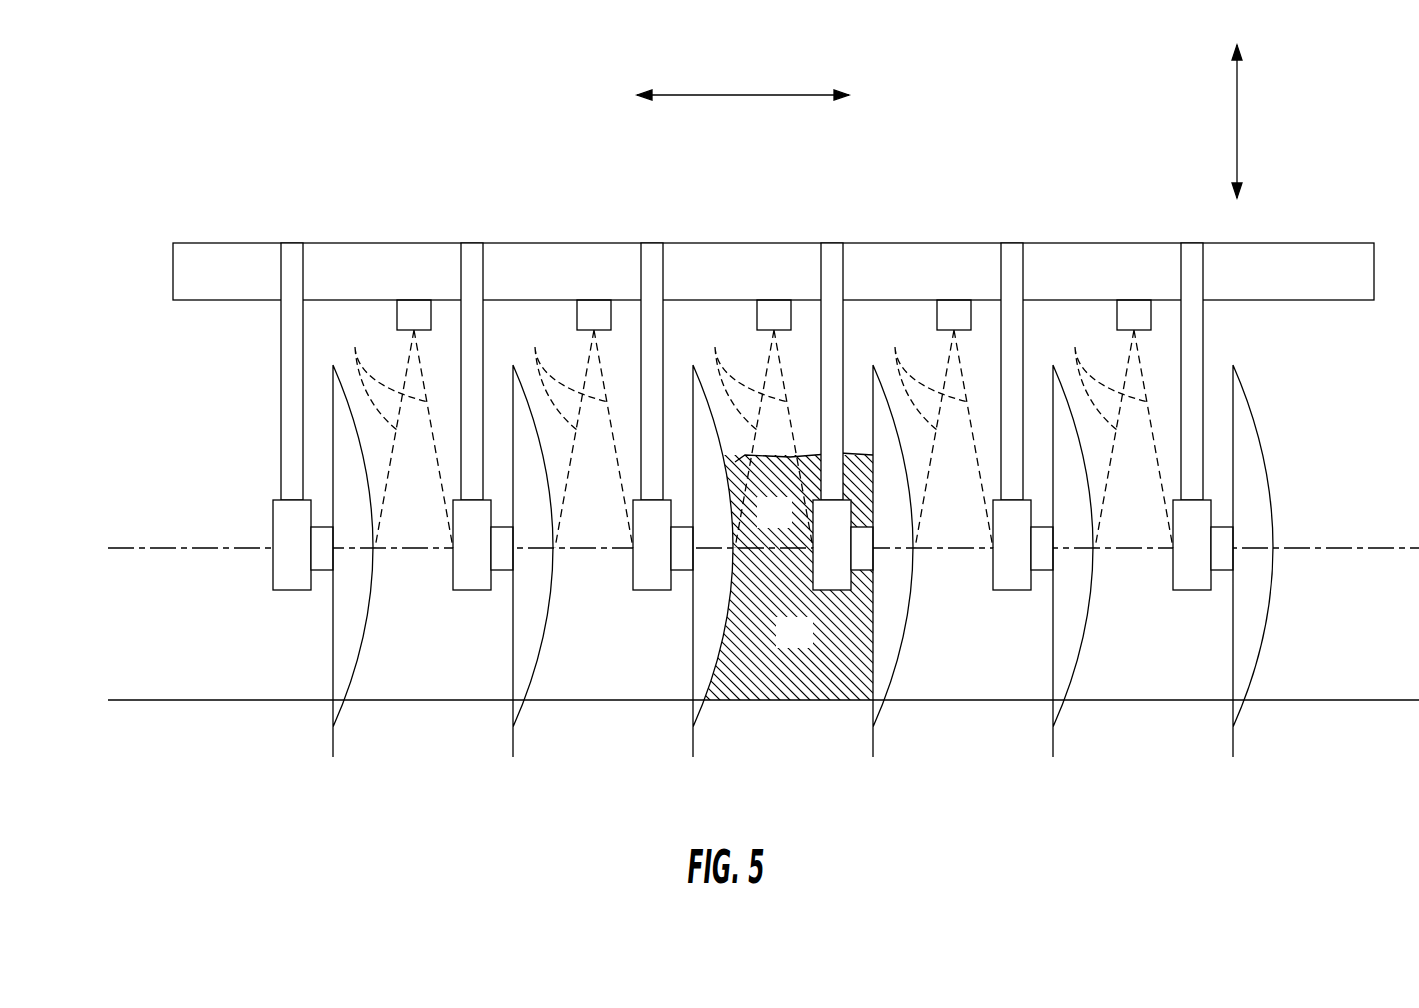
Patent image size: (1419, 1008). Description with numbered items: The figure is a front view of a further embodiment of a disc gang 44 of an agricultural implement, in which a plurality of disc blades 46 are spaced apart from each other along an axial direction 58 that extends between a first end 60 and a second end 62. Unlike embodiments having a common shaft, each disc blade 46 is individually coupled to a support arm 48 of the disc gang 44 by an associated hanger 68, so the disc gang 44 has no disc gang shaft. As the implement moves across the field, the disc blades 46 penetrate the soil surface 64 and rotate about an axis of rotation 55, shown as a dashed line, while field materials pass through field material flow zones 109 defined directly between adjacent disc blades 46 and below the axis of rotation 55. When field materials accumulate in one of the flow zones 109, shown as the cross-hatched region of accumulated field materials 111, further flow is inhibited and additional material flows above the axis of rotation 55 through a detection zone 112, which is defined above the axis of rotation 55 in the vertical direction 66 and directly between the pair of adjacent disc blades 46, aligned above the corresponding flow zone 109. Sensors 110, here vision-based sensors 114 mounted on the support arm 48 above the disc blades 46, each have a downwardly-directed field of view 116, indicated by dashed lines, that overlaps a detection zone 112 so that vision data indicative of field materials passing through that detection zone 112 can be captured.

The disc gang 44 is at (236, 98).
The disc blades 46 is at (333, 757).
The support arm 48 is at (322, 243).
The axis of rotation 55 is at (1373, 548).
The axial direction 58 is at (732, 95).
The first end 60 is at (87, 542).
The second end 62 is at (1320, 531).
The soil surface 64 is at (1313, 699).
The vertical direction 66 is at (1237, 127).
The hanger 68 is at (281, 398).
The field material flow zone 109 is at (484, 678).
The sensor 110 is at (418, 313).
The accumulated field materials 111 is at (823, 685).
The detection zone 112 is at (397, 526).
The vision-based sensor 114 is at (774, 439).
The field of view 116 is at (743, 374).